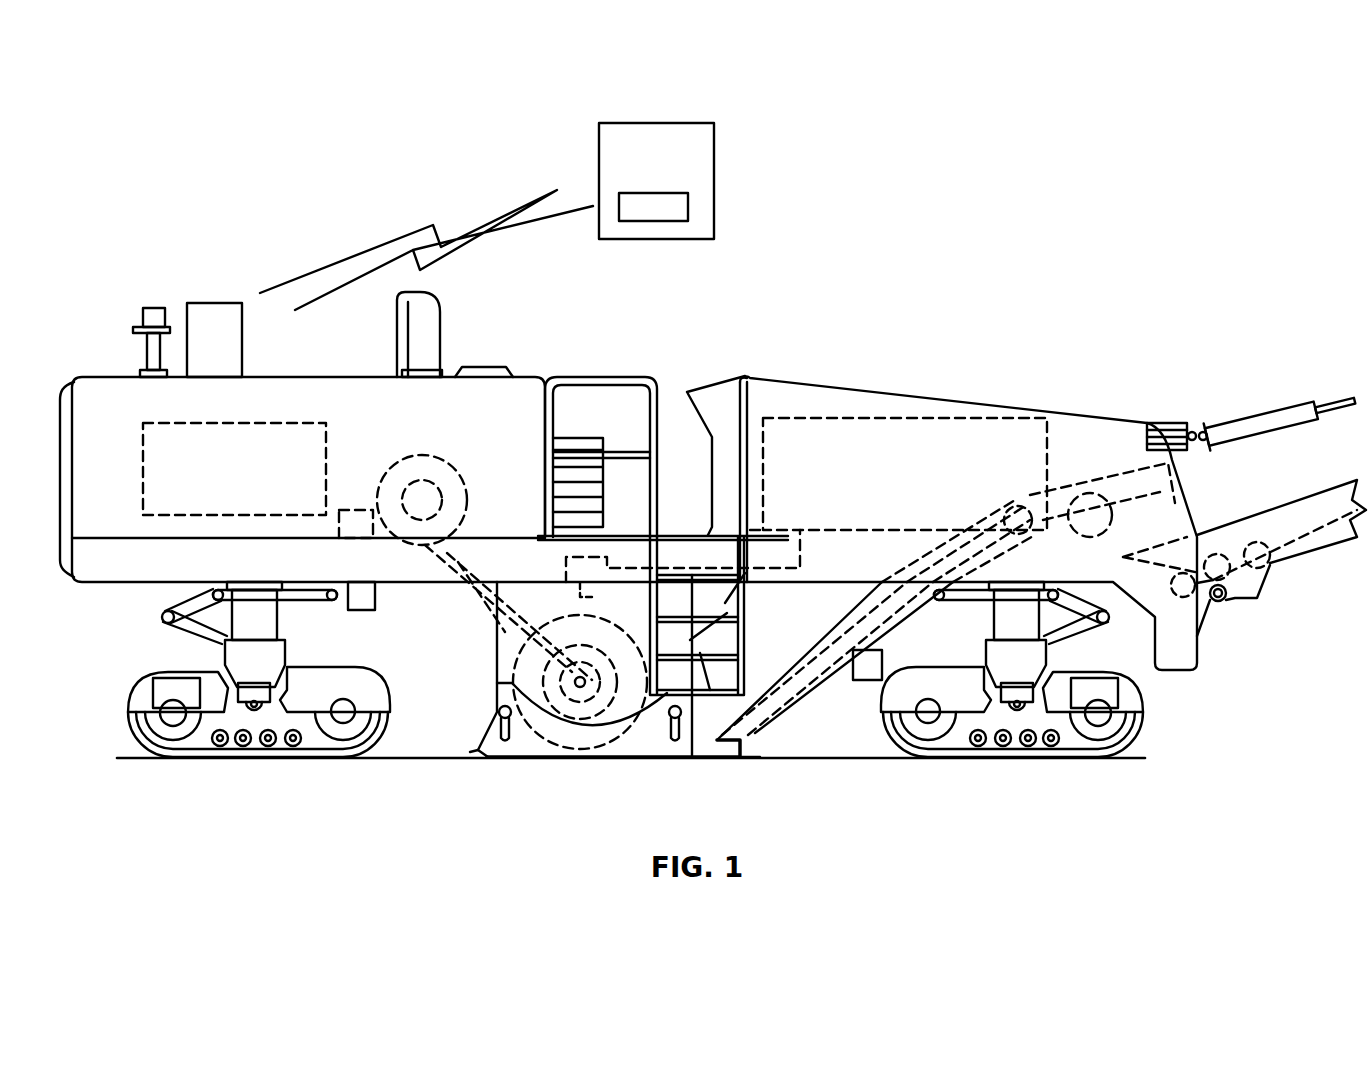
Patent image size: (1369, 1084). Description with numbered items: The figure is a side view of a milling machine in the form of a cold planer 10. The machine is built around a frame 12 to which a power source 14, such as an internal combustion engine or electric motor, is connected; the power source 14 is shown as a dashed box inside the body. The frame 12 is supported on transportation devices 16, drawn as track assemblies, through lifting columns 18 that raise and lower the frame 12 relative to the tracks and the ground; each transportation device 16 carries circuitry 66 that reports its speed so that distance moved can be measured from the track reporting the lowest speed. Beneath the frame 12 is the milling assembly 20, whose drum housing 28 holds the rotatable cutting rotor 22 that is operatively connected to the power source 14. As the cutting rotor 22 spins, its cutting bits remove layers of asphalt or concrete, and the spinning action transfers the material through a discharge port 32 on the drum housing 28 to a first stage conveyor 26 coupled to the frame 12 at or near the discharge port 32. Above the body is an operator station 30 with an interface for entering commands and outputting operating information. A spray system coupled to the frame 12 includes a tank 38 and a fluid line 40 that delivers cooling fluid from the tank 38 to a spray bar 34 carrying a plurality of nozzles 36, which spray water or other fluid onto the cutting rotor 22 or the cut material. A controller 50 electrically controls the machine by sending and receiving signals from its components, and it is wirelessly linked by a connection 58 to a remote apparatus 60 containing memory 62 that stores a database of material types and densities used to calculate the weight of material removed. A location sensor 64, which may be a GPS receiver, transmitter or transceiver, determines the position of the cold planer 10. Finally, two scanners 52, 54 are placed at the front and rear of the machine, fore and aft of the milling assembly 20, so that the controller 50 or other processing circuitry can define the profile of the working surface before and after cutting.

The cold planer 10 is at (1194, 337).
The frame 12 is at (64, 576).
The power source 14 is at (197, 421).
The transportation devices 16 is at (140, 726).
The lifting columns 18 is at (283, 621).
The milling assembly 20 is at (483, 746).
The cutting rotor 22 is at (636, 746).
The first stage conveyor 26 is at (749, 722).
The drum housing 28 is at (494, 668).
The operator station 30 is at (658, 372).
The discharge port 32 is at (749, 681).
The spray bar 34 is at (608, 566).
The nozzles 36 is at (593, 590).
The tank 38 is at (906, 416).
The fluid line 40 is at (800, 553).
The controller 50 is at (360, 509).
The scanner 52 is at (859, 682).
The scanner 54 is at (362, 612).
The connection 58 is at (396, 248).
The remote apparatus 60 is at (714, 180).
The memory 62 is at (664, 200).
The location sensor 64 is at (200, 300).
The circuitry 66 is at (178, 671).